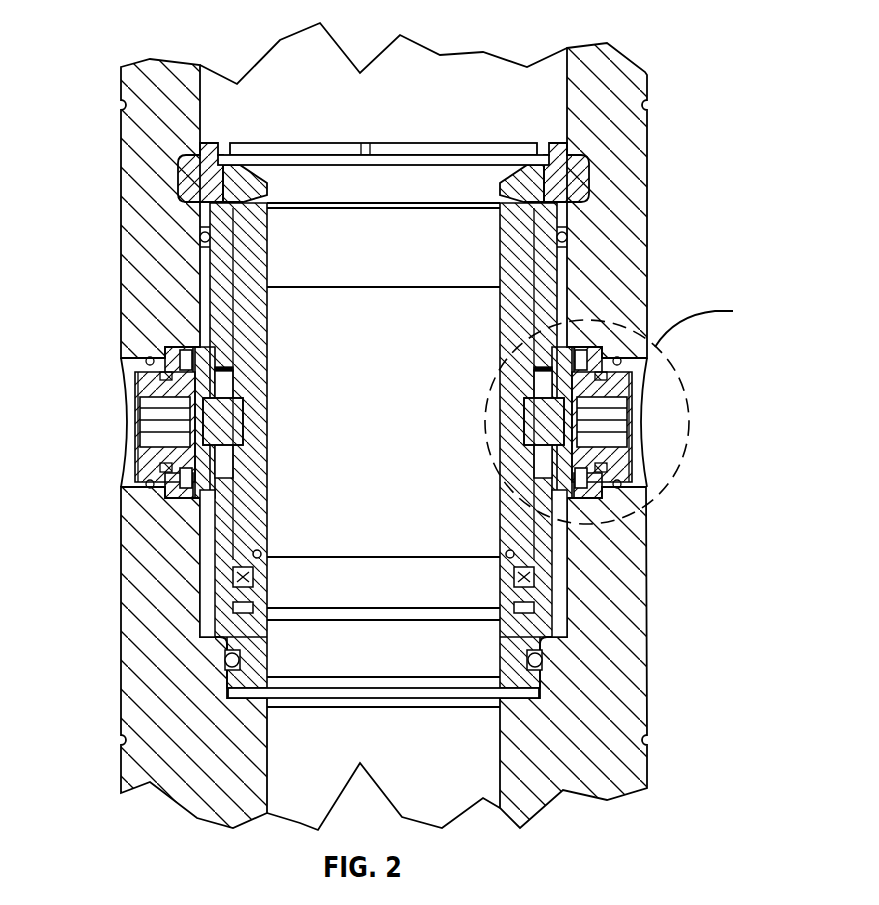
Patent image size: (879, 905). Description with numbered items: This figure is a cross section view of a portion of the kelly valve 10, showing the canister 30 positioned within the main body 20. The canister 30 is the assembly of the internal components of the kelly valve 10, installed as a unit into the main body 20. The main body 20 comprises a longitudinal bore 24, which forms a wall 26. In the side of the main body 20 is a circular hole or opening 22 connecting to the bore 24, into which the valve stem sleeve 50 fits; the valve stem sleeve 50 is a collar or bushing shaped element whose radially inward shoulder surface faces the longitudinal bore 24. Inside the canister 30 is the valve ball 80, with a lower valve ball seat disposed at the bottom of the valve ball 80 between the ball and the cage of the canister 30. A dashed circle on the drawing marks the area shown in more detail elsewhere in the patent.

The kelly valve 10 is at (105, 31).
The main body 20 is at (121, 635).
The circular hole or opening 22 is at (668, 362).
The longitudinal bore 24 is at (447, 783).
The wall 26 is at (625, 678).
The canister 30 is at (422, 122).
The valve stem sleeve 50 is at (603, 492).
The valve ball 80 is at (260, 508).